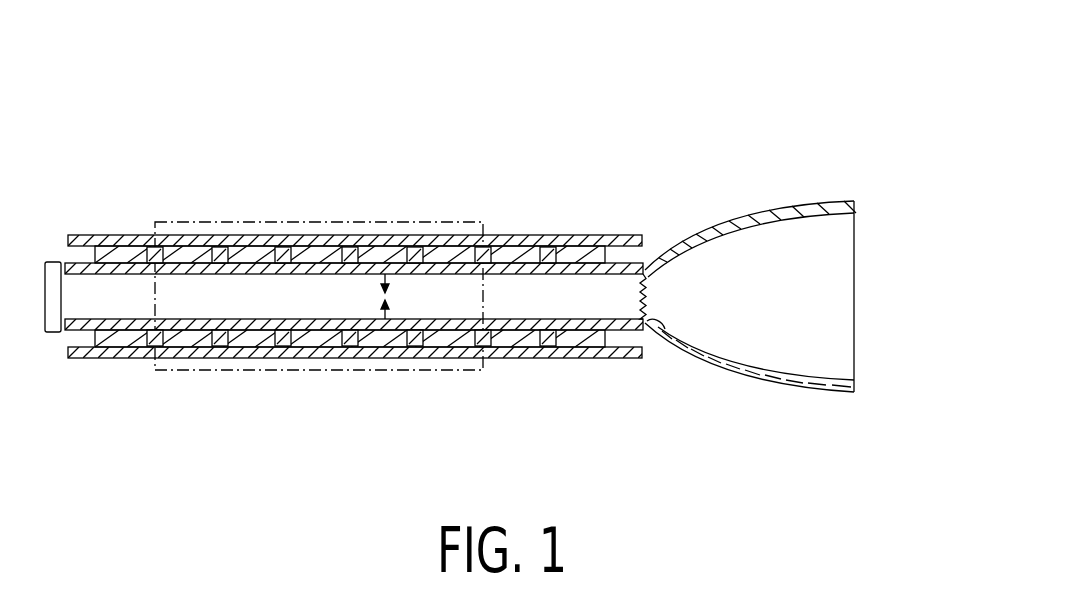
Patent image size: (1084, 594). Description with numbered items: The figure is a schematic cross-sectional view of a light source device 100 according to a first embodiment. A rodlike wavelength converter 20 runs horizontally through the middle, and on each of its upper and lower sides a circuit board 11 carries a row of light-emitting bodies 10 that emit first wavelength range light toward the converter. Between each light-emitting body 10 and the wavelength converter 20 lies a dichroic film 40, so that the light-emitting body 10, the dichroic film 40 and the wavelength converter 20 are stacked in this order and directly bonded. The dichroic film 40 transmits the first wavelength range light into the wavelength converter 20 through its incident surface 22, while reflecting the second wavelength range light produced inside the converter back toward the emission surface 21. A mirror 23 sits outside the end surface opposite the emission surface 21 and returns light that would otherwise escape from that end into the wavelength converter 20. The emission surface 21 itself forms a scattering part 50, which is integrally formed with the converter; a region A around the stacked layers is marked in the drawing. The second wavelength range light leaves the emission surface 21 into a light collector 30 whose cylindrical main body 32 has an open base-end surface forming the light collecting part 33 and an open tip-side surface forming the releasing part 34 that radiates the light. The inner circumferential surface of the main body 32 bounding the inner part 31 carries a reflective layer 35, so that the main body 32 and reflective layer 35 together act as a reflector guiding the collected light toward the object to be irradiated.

The light source device 100 is at (755, 122).
The light-emitting body 10 is at (522, 240).
The circuit board 11 is at (386, 272).
The wavelength converter 20 is at (247, 292).
The emission surface 21 is at (647, 297).
The scattering part 50 is at (643, 296).
The incident surface 22 is at (328, 258).
The mirror 23 is at (53, 262).
The light collector 30 is at (880, 238).
The inner part 31 is at (795, 237).
The main body 32 is at (807, 390).
The light collecting part 33 is at (661, 333).
The releasing part 34 is at (857, 360).
The reflective layer 35 is at (737, 230).
The dichroic film 40 is at (172, 252).
The region A is at (470, 222).